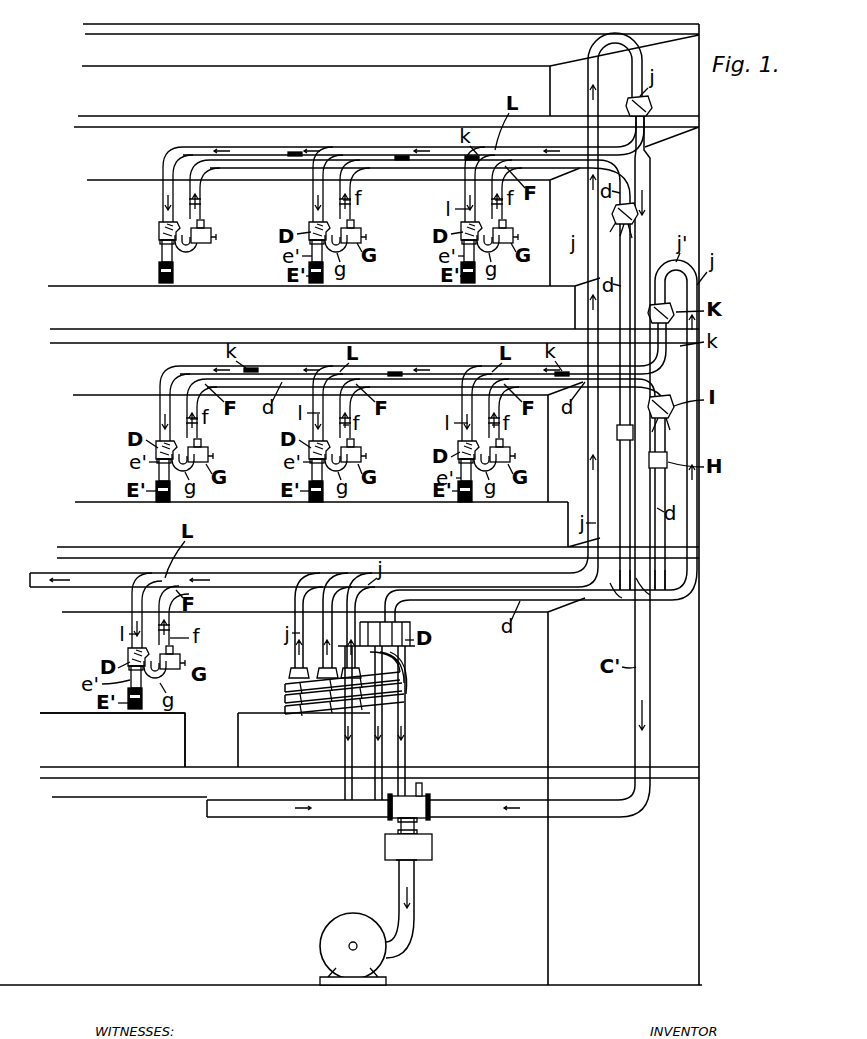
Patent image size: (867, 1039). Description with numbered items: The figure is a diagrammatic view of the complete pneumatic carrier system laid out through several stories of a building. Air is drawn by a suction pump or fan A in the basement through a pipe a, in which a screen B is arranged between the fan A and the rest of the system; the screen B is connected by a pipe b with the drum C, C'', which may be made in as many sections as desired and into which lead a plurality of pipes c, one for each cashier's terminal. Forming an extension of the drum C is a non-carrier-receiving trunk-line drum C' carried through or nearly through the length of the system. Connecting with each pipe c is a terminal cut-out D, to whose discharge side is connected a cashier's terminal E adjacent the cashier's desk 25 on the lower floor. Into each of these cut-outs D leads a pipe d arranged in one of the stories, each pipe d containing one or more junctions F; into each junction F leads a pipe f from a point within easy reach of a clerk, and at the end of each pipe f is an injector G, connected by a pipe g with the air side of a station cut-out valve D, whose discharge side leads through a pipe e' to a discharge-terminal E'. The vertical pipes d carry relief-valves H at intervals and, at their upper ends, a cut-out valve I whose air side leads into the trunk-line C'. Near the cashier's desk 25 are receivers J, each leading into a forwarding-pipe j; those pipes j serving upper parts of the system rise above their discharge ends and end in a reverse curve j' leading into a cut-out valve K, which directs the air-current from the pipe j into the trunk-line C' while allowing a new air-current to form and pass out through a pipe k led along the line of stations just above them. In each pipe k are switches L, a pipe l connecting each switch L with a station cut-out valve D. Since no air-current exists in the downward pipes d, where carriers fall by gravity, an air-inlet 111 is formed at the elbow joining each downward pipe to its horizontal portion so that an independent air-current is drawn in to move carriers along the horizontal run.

The suction pump or fan A is at (326, 947).
The pipe a is at (410, 893).
The screen B is at (420, 850).
The pipe b is at (416, 827).
The drum C is at (426, 799).
The non-carrier-receiving trunk-line drum C' is at (646, 469).
The drum C'' is at (413, 828).
The pipes c is at (400, 742).
The cut-out valve D is at (161, 232).
The pipe d is at (278, 163).
The cashier's terminal E is at (346, 696).
The discharge-terminal E' is at (151, 274).
The pipe e' is at (152, 251).
The junction F is at (352, 166).
The pipe f is at (192, 200).
The injector G is at (207, 243).
The pipe g is at (187, 253).
The relief-valve H is at (618, 437).
The cut-out valve I is at (627, 224).
The receiver J is at (292, 690).
The forwarding-pipe j is at (634, 315).
The reverse curve j' is at (642, 152).
The cut-out valve K is at (652, 106).
The pipe k is at (288, 153).
The switch L is at (338, 150).
The pipe l is at (320, 205).
The air-inlet 111 is at (656, 586).
The cashier's desk 25 is at (138, 727).